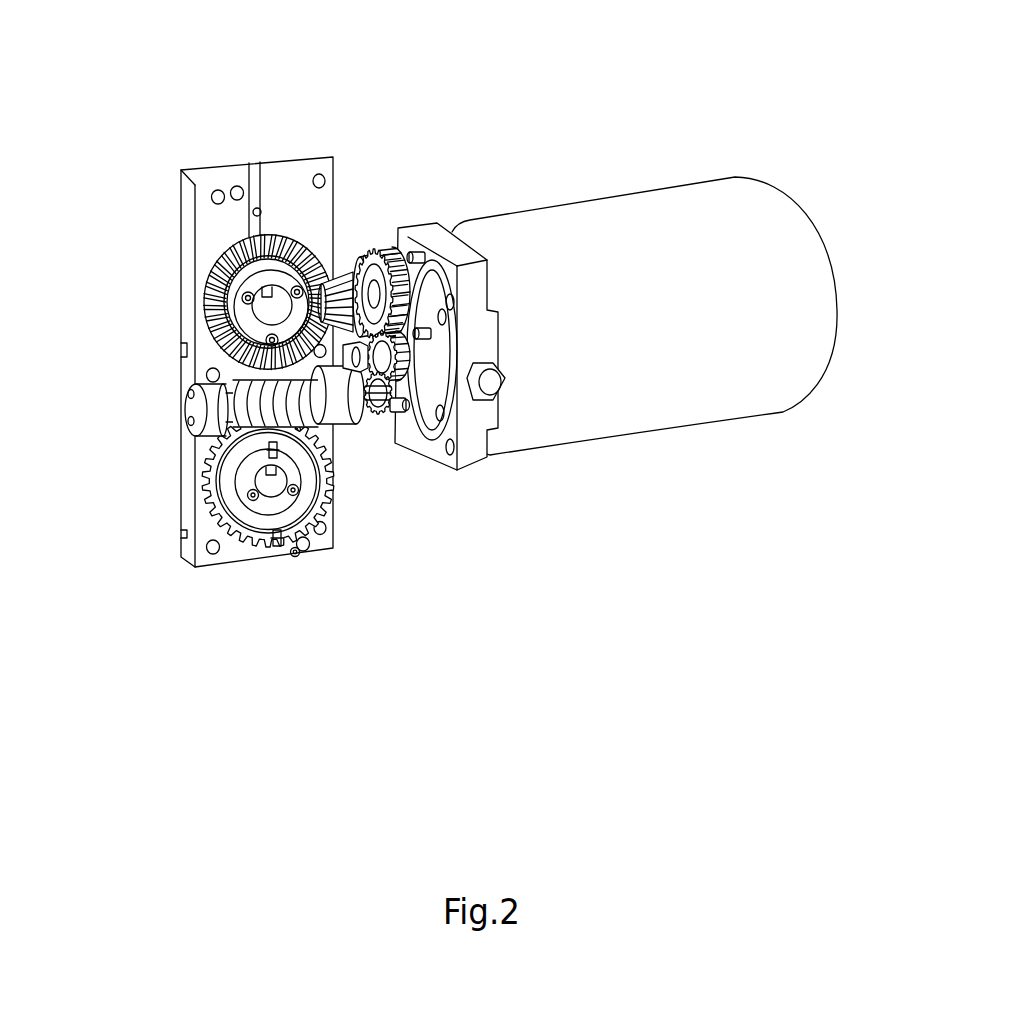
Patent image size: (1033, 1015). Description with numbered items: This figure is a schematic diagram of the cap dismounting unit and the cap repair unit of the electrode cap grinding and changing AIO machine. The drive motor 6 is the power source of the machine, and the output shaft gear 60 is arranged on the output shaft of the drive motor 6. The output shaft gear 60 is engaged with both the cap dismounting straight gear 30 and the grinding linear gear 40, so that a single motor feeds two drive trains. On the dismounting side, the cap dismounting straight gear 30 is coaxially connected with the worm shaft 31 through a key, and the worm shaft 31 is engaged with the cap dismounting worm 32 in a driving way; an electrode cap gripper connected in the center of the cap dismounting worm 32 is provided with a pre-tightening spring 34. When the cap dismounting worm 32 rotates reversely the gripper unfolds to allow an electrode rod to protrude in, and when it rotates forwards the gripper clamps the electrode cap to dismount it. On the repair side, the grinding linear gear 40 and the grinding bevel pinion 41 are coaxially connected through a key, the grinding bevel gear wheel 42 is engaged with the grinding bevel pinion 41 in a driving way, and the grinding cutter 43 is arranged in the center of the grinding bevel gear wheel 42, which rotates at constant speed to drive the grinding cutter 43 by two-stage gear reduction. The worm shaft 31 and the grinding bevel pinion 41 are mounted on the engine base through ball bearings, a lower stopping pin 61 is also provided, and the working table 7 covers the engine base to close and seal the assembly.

The drive motor 6 is at (669, 313).
The working table 7 is at (287, 172).
The cap dismounting straight gear 30 is at (380, 407).
The worm shaft 31 is at (320, 487).
The cap dismounting worm 32 is at (213, 493).
The pre-tightening spring 34 is at (272, 493).
The grinding linear gear 40 is at (388, 258).
The grinding bevel pinion 41 is at (340, 283).
The grinding bevel gear wheel 42 is at (230, 268).
The grinding cutter 43 is at (268, 310).
The output shaft gear 60 is at (402, 363).
The lower stopping pin 61 is at (491, 382).